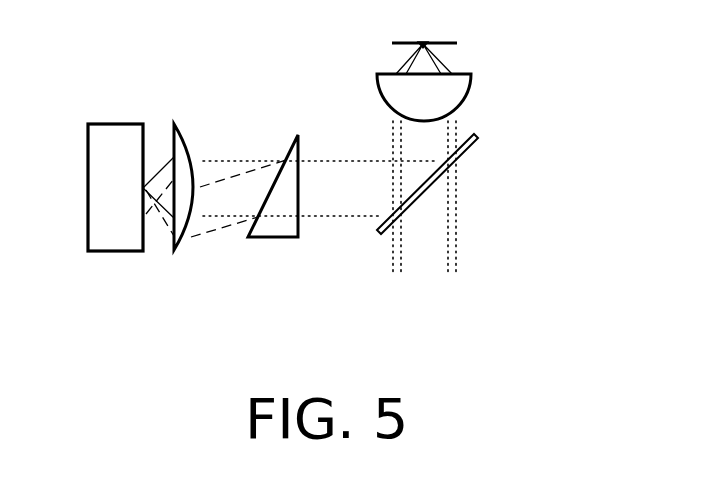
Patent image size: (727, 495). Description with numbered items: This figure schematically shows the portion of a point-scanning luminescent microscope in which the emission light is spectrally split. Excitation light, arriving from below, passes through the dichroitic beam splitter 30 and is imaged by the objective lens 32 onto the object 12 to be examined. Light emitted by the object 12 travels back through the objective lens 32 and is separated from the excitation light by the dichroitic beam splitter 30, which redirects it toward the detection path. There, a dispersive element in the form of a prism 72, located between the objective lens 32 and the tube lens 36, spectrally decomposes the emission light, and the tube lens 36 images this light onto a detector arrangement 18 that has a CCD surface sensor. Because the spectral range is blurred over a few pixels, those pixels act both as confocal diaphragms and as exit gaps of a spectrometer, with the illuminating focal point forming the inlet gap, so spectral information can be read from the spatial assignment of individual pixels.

The object 12 is at (446, 42).
The detector arrangement 18 is at (112, 242).
The dichroitic beam splitter 30 is at (424, 192).
The objective lens 32 is at (450, 93).
The tube lens 36 is at (182, 140).
The prism 72 is at (276, 229).